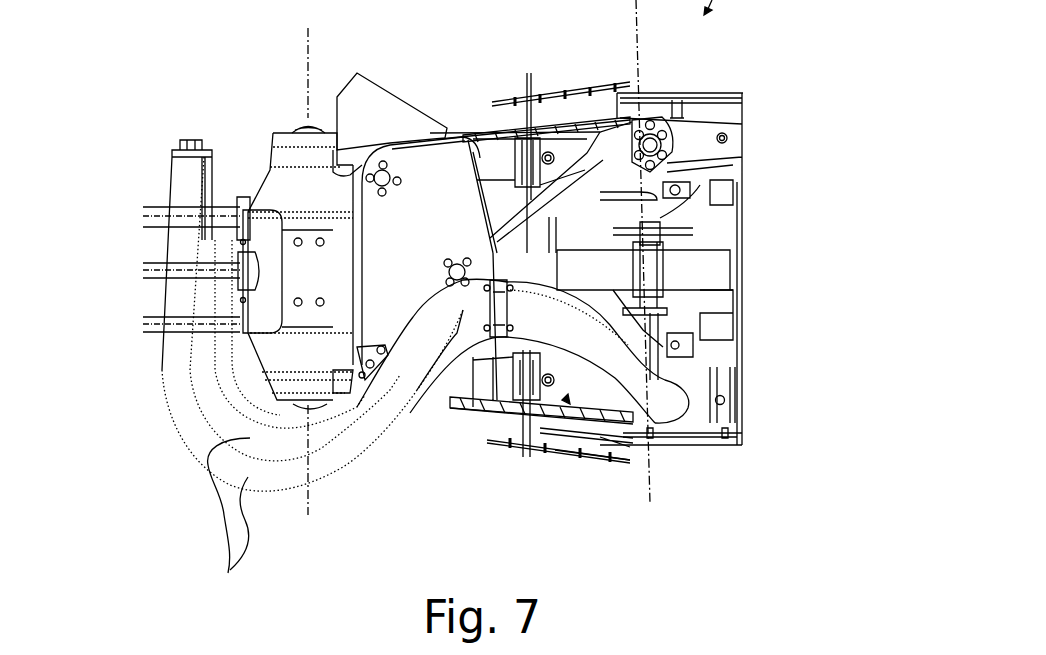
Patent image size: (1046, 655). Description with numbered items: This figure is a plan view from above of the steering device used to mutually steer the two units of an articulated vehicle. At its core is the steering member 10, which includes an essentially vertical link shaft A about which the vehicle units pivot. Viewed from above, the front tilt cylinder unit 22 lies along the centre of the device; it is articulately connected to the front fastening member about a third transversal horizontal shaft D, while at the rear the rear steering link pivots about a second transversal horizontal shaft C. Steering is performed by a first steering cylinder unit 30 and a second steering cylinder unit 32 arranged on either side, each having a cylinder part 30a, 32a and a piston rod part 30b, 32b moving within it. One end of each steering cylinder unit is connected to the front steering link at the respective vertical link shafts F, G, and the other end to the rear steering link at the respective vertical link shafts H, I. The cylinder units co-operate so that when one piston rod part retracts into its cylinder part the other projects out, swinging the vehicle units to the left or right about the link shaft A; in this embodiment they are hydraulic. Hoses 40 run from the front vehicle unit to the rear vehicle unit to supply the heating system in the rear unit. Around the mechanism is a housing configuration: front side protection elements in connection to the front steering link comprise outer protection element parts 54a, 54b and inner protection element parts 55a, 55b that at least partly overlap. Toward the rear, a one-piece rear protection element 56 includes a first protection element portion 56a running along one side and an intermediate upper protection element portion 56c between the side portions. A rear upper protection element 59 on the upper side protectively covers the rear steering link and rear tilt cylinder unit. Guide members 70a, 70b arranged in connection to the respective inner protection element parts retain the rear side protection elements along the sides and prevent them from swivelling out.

The steering member 10 is at (685, 214).
The front tilt cylinder unit 22 is at (705, 281).
The first steering cylinder unit 30 is at (710, 138).
The cylinder part 30a is at (687, 127).
The piston rod part 30b is at (483, 157).
The second steering cylinder unit 32 is at (572, 437).
The cylinder part 32a is at (558, 432).
The piston rod part 32b is at (493, 372).
The hoses 40 is at (334, 383).
The outer protection element part 54a is at (572, 97).
The outer protection element part 54b is at (577, 460).
The inner protection element part 55a is at (555, 133).
The inner protection element part 55b is at (512, 436).
The rear protection element 56 is at (278, 361).
The first protection element portion 56a is at (287, 130).
The intermediate upper protection element portion 56c is at (273, 185).
The rear upper protection element 59 is at (443, 148).
The guide member 70a is at (515, 100).
The guide member 70b is at (623, 460).
The vertical link shaft A is at (440, 360).
The second transversal horizontal shaft C is at (308, 50).
The third transversal horizontal shaft D is at (650, 490).
The vertical link shaft F is at (647, 110).
The vertical link shaft G is at (692, 427).
The vertical link shaft H is at (335, 222).
The vertical link shaft I is at (347, 350).